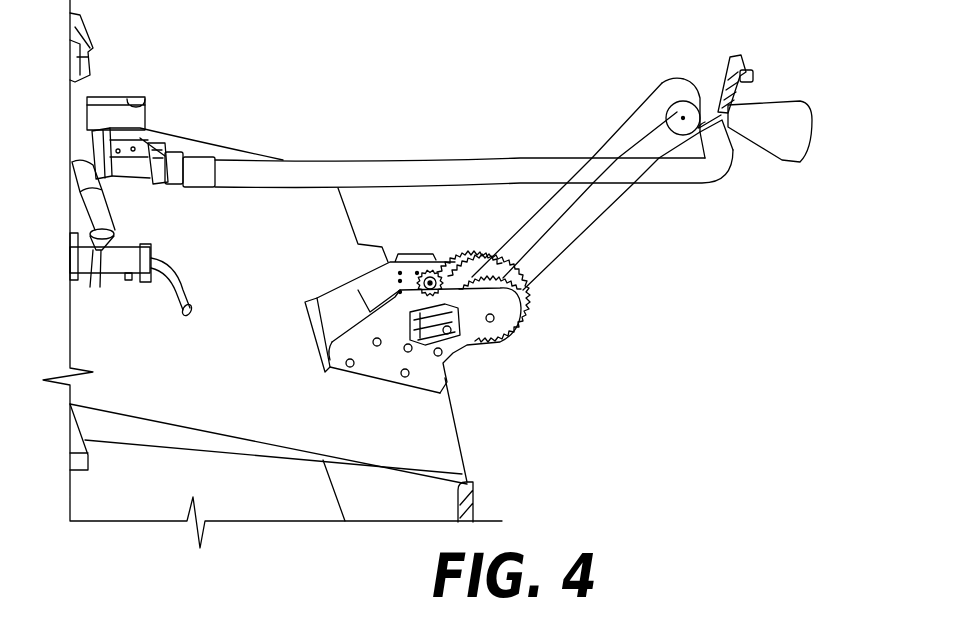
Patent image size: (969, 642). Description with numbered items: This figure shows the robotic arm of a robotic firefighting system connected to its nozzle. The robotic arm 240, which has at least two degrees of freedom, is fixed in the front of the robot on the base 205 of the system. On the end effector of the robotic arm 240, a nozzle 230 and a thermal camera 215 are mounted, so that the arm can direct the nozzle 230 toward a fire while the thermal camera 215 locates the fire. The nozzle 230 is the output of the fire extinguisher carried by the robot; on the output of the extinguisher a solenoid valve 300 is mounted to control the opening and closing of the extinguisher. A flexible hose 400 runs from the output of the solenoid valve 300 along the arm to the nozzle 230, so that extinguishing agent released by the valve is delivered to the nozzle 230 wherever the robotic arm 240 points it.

The base 205 is at (437, 437).
The thermal camera 215 is at (718, 66).
The nozzle 230 is at (782, 160).
The robotic arm 240 is at (552, 245).
The solenoid valve 300 is at (130, 155).
The flexible hose 400 is at (467, 158).